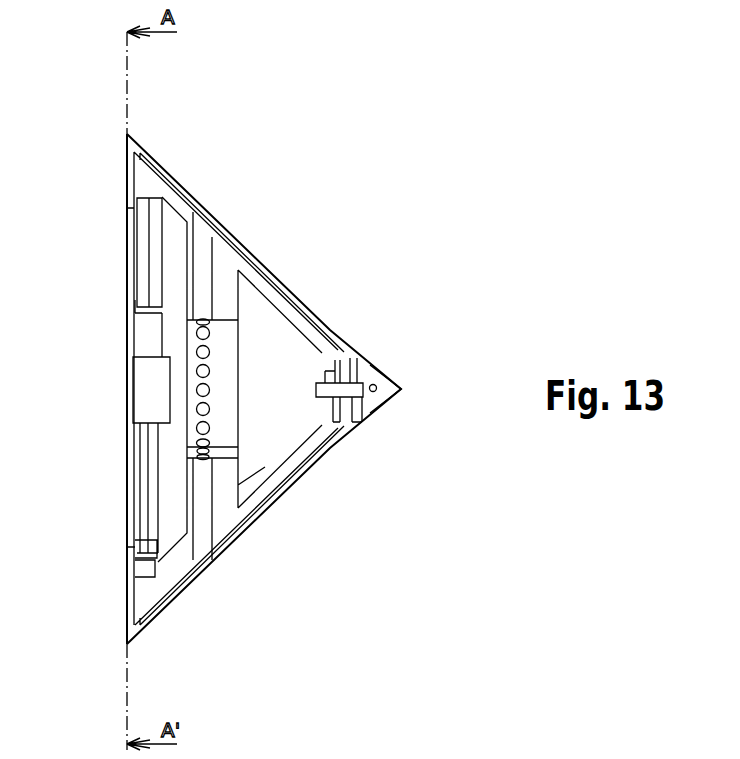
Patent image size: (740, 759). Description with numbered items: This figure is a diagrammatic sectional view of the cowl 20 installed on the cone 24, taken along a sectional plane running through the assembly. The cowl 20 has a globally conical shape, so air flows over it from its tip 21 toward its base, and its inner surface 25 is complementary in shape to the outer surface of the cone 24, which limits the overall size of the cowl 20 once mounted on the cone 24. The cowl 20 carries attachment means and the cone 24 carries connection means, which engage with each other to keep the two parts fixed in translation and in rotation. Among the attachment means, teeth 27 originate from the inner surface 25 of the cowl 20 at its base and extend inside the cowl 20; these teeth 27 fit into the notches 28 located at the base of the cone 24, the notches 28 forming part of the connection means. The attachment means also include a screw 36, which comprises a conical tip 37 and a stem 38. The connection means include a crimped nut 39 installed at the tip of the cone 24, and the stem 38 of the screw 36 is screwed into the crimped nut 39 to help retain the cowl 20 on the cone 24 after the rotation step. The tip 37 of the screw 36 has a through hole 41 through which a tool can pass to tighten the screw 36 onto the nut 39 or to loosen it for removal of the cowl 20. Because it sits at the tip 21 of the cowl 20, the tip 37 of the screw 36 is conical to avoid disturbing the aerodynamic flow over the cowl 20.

The cowl 20 is at (178, 592).
The tip 21 is at (357, 410).
The cone 24 is at (200, 565).
The inner surface 25 is at (225, 545).
The teeth 27 is at (124, 343).
The notches 28 is at (126, 403).
The screw 36 is at (382, 368).
The tip 37 is at (390, 394).
The stem 38 is at (327, 367).
The crimped nut 39 is at (343, 407).
The through hole 41 is at (374, 392).